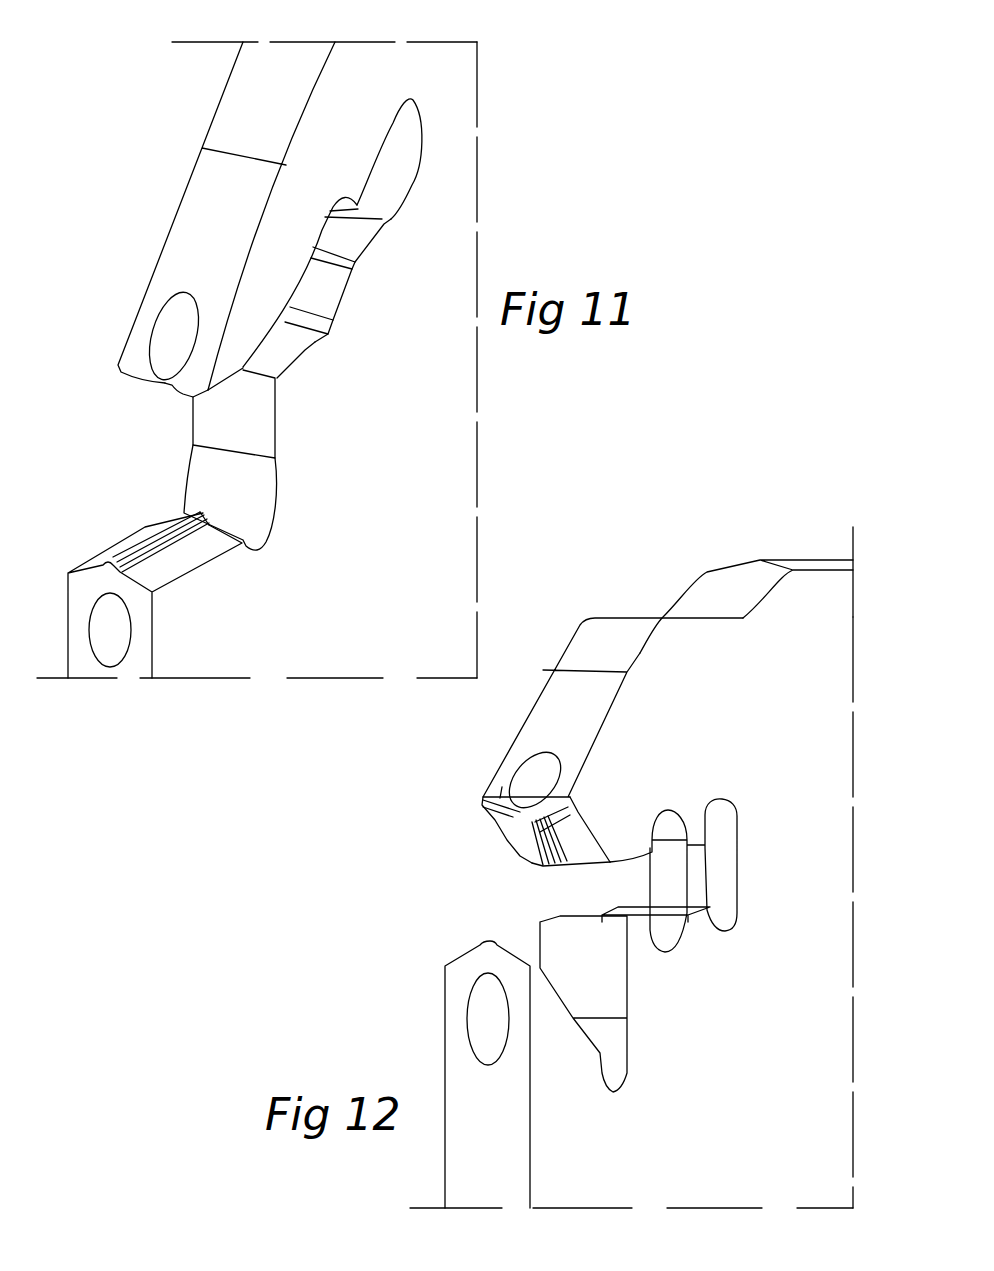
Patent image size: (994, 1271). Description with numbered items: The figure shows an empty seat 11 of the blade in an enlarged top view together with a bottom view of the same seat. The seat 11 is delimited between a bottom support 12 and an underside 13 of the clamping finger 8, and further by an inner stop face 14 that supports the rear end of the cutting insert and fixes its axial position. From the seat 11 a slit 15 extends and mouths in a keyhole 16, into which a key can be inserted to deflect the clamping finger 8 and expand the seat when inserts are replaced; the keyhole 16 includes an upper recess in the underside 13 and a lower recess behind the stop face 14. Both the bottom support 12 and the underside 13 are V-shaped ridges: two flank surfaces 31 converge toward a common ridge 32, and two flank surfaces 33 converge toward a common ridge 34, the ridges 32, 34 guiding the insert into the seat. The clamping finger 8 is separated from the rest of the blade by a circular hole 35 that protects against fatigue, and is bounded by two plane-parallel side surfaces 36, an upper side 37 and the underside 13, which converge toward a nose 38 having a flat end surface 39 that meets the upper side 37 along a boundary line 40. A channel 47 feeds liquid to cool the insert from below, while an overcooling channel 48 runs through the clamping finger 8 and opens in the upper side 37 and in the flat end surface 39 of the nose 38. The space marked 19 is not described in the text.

In FIG. 11, the clamping finger 8 is at (163, 180).
In FIG. 11, the seat 11 is at (118, 448).
In FIG. 12, the seat 11 is at (478, 928).
In FIG. 11, the bottom support 12 is at (116, 512).
In FIG. 11, the underside of the clamping finger 13 is at (172, 408).
In FIG. 12, the underside of the clamping finger 13 is at (520, 850).
In FIG. 11, the inner stop face 14 is at (225, 428).
In FIG. 12, the inner stop face 14 is at (569, 980).
In FIG. 11, the slit 15 is at (276, 354).
In FIG. 11, the keyhole 16 is at (327, 300).
In FIG. 11, the free space 19 is at (358, 499).
In FIG. 11, the flank surfaces 31 is at (122, 548).
In FIG. 11, the ridge 32 is at (177, 523).
In FIG. 12, the flank surfaces 33 is at (512, 838).
In FIG. 12, the ridge 34 is at (537, 862).
In FIG. 12, the circular hole 35 is at (722, 840).
In FIG. 11, the side surfaces 36 is at (264, 265).
In FIG. 12, the side surfaces 36 is at (641, 749).
In FIG. 11, the upper side 37 is at (195, 240).
In FIG. 12, the upper side 37 is at (546, 729).
In FIG. 12, the nose 38 is at (470, 797).
In FIG. 12, the flat end surface 39 is at (512, 810).
In FIG. 12, the boundary line 40 is at (500, 790).
In FIG. 11, the channel 47 is at (114, 627).
In FIG. 12, the channel 47 is at (488, 1017).
In FIG. 11, the channel 48 is at (168, 333).
In FIG. 12, the channel 48 is at (530, 783).